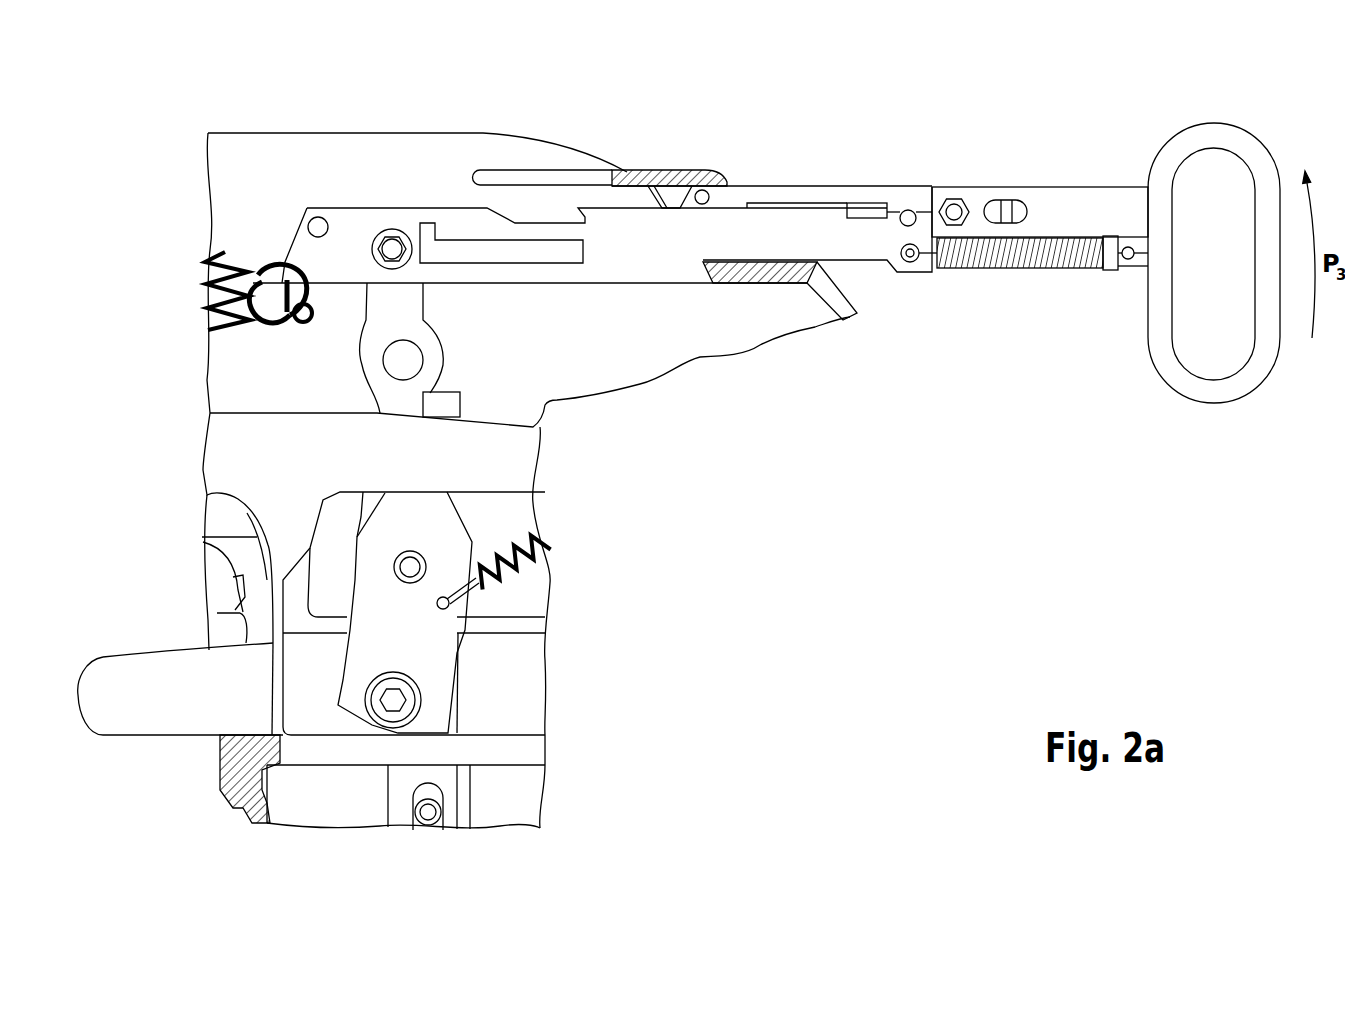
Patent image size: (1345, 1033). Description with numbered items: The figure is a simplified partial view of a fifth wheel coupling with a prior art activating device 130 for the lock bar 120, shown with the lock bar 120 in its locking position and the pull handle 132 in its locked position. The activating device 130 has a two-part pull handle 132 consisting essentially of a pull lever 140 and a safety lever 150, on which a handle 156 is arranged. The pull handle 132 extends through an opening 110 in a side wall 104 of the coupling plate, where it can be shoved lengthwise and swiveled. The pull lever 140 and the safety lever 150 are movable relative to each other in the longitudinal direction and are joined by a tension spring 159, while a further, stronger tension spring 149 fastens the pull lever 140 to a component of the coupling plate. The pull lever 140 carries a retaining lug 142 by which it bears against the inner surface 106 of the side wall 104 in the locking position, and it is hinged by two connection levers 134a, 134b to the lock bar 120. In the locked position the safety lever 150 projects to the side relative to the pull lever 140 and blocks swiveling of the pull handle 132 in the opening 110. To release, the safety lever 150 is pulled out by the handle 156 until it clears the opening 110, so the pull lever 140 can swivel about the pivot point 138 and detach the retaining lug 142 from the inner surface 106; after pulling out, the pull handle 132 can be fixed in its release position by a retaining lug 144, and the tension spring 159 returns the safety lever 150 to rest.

The side wall 104 is at (705, 168).
The inner surface 106 is at (712, 283).
The opening 110 is at (738, 180).
The lock bar 120 is at (146, 738).
The activating device 130 is at (637, 508).
The pull handle 132 is at (880, 172).
The connection lever 134a is at (372, 365).
The connection lever 134b is at (437, 657).
The pivot point 138 is at (392, 229).
The pull lever 140 is at (657, 273).
The retaining lug 142 is at (712, 283).
The retaining lug 144 is at (577, 210).
The tension spring 149 is at (228, 255).
The safety lever 150 is at (1082, 207).
The handle 156 is at (1210, 389).
The tension spring 159 is at (1022, 268).